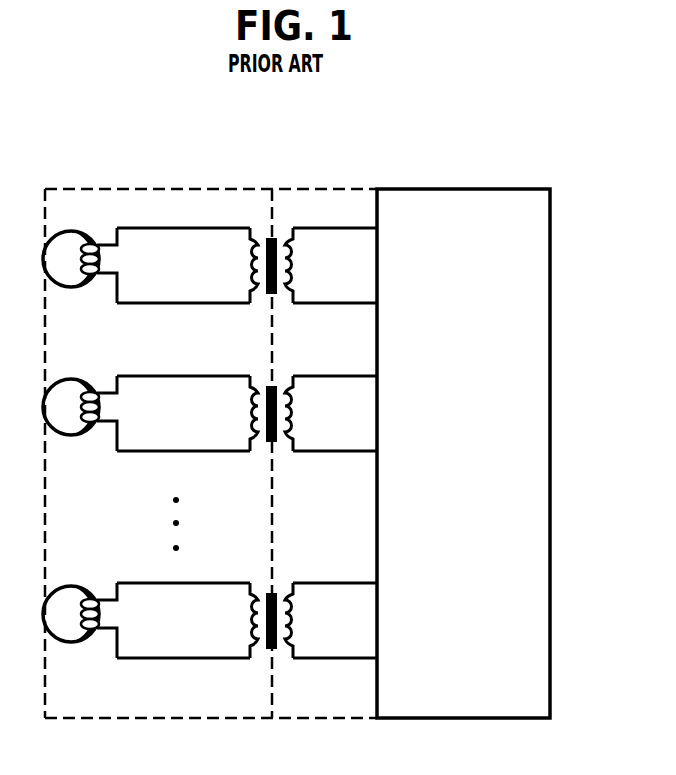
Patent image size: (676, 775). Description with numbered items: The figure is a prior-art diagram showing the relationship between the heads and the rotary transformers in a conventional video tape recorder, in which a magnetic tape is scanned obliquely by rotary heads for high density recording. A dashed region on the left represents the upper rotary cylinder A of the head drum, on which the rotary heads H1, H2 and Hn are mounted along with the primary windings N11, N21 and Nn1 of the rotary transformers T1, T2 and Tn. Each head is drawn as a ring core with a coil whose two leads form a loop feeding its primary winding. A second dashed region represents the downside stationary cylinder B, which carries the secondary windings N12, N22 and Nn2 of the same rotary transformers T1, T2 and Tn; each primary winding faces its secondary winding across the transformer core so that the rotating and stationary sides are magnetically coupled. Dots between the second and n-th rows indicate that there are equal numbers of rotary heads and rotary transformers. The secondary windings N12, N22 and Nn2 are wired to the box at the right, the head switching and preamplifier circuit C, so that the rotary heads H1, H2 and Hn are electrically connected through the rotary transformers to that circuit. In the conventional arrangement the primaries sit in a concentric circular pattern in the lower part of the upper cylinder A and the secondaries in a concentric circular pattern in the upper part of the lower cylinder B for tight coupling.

The upper rotary cylinder A is at (158, 186).
The downside stationary cylinder B is at (332, 186).
The head switching and preamplifier circuit C is at (465, 186).
The rotary head H1 is at (80, 287).
The rotary head H2 is at (80, 435).
The rotary head Hn is at (80, 642).
The rotary transformer T1 is at (273, 282).
The rotary transformer T2 is at (273, 430).
The rotary transformer Tn is at (273, 637).
The primary winding N11 is at (232, 265).
The secondary winding N12 is at (312, 265).
The primary winding N21 is at (232, 413).
The secondary winding N22 is at (312, 413).
The primary winding Nn1 is at (232, 620).
The secondary winding Nn2 is at (312, 620).